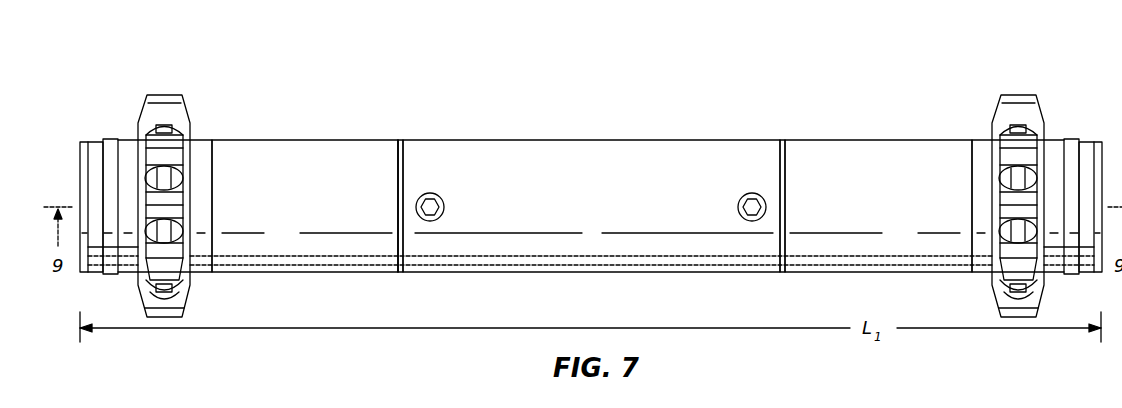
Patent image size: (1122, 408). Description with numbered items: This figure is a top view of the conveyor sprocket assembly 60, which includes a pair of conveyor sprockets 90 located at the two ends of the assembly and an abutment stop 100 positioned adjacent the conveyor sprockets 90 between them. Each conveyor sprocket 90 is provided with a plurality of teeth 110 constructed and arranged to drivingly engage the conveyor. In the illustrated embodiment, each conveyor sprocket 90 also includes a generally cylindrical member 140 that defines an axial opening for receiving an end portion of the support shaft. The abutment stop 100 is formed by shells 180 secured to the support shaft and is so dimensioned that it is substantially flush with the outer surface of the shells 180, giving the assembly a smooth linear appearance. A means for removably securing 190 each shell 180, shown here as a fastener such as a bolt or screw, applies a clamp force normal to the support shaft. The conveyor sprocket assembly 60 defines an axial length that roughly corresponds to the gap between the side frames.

The conveyor sprocket assembly 60 is at (644, 90).
The conveyor sprocket 90 is at (173, 81).
The abutment stop 100 is at (502, 133).
The teeth 110 is at (177, 207).
The generally cylindrical member 140 is at (291, 153).
The shell 180 is at (712, 150).
The means for removably securing 190 is at (433, 205).